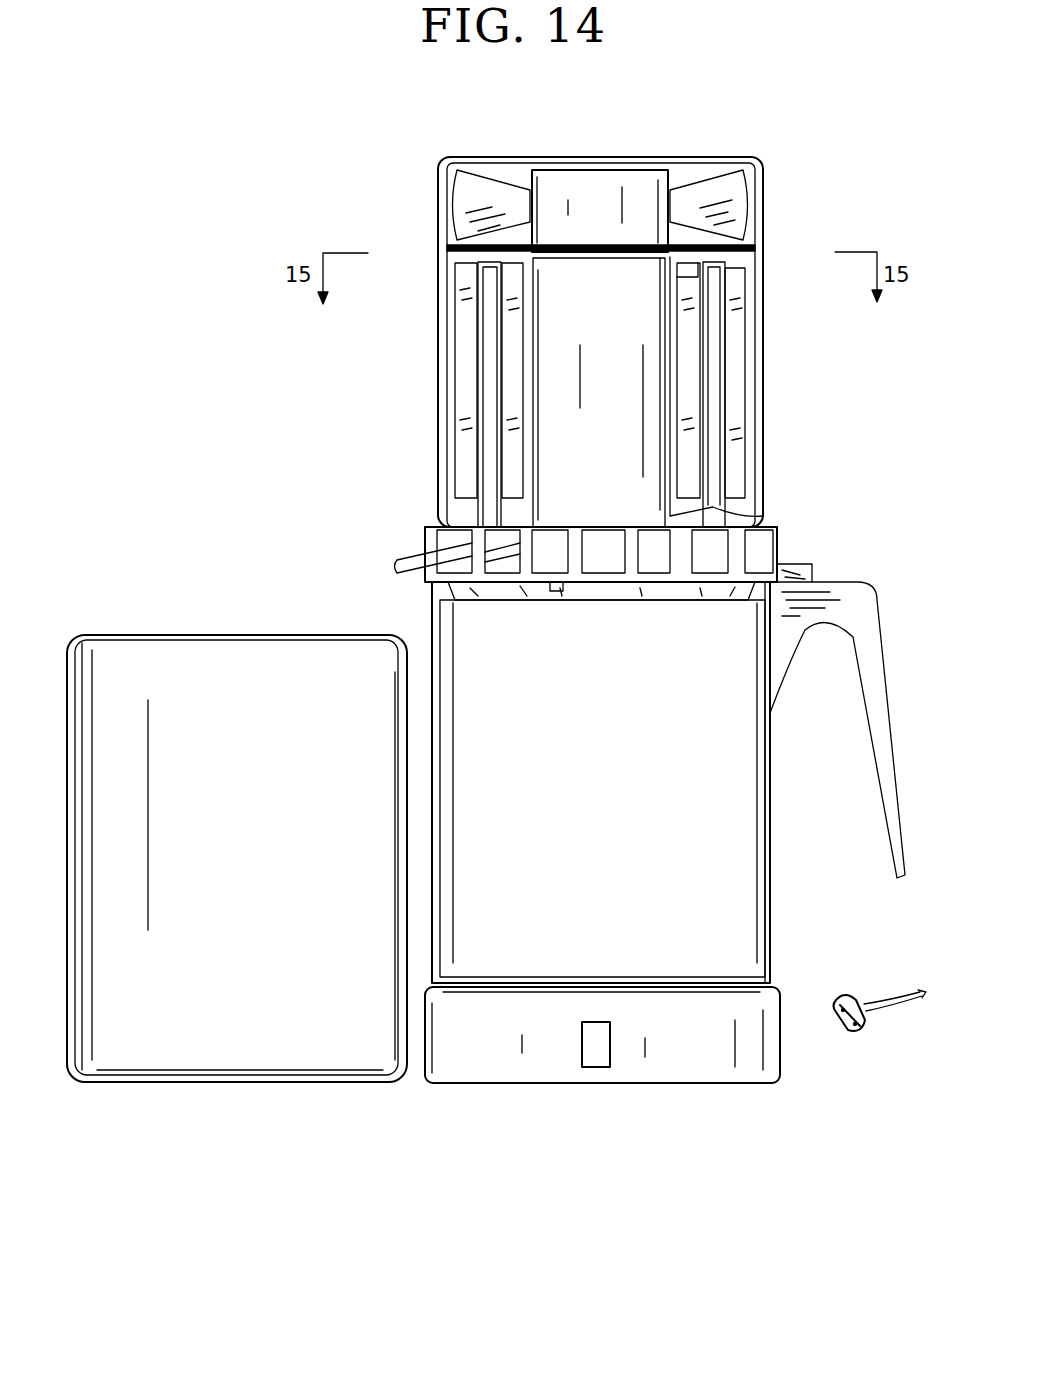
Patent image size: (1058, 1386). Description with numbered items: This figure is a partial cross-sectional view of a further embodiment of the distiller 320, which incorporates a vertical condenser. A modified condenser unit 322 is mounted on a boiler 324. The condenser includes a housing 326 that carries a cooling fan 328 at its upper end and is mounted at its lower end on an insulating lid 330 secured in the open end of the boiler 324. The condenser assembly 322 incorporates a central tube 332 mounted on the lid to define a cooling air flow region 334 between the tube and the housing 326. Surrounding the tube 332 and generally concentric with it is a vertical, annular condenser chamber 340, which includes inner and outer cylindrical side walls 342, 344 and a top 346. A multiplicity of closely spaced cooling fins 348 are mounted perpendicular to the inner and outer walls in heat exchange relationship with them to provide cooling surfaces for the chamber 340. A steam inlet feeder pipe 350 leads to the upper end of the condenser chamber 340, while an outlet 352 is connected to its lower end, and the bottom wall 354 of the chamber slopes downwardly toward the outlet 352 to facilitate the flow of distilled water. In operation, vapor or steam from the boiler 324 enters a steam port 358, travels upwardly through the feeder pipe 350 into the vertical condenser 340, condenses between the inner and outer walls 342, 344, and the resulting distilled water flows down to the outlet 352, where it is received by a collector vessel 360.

The distiller 320 is at (807, 157).
The condenser unit 322 is at (764, 460).
The boiler 324 is at (770, 893).
The housing 326 is at (763, 363).
The cooling fan 328 is at (595, 185).
The insulating lid 330 is at (778, 540).
The central tube 332 is at (660, 343).
The cooling air flow region 334 is at (740, 257).
The condenser chamber 340 is at (727, 428).
The inner cylindrical side wall 342 is at (500, 320).
The outer cylindrical side wall 344 is at (480, 377).
The top 346 is at (488, 262).
The cooling fins 348 is at (462, 413).
The steam inlet feeder pipe 350 is at (688, 288).
The outlet 352 is at (415, 558).
The bottom wall 354 is at (763, 516).
The steam port 358 is at (557, 594).
The collector vessel 360 is at (295, 1092).